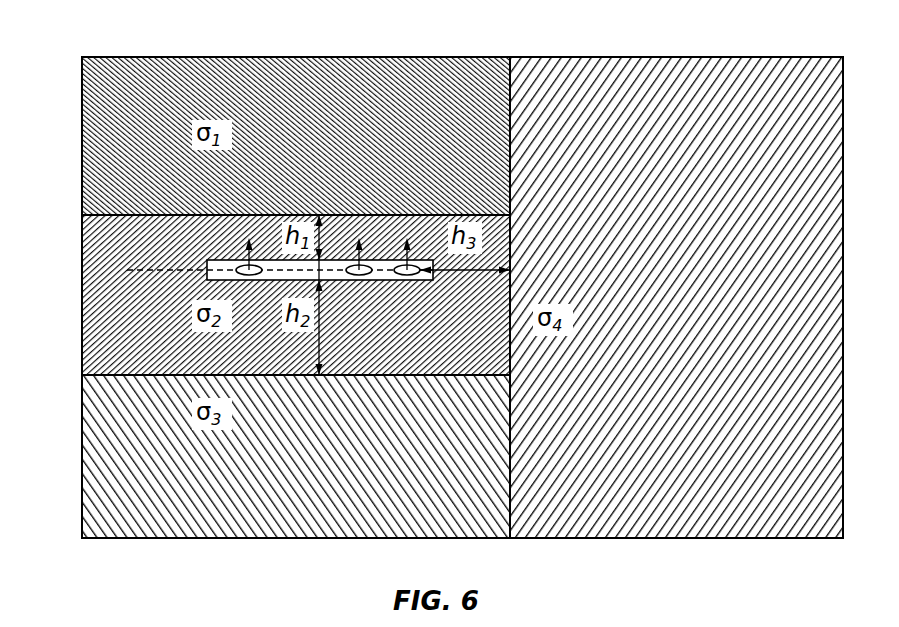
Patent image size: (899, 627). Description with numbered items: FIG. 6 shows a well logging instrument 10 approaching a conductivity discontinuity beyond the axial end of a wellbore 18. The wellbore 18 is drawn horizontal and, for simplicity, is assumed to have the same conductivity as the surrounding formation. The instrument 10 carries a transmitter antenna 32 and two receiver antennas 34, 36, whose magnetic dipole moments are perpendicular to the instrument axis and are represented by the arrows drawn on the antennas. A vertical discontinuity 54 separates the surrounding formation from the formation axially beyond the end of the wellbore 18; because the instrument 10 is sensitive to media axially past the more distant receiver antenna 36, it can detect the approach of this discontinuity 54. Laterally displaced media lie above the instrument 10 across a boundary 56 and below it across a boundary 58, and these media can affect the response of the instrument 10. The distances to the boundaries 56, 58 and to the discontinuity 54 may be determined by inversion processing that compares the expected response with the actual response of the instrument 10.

The well logging instrument 10 is at (272, 281).
The wellbore 18 is at (160, 357).
The transmitter antenna 32 is at (246, 264).
The receiver antenna 34 is at (357, 264).
The receiver antenna 36 is at (409, 263).
The discontinuity 54 is at (510, 57).
The boundary 56 is at (82, 215).
The boundary 58 is at (82, 375).